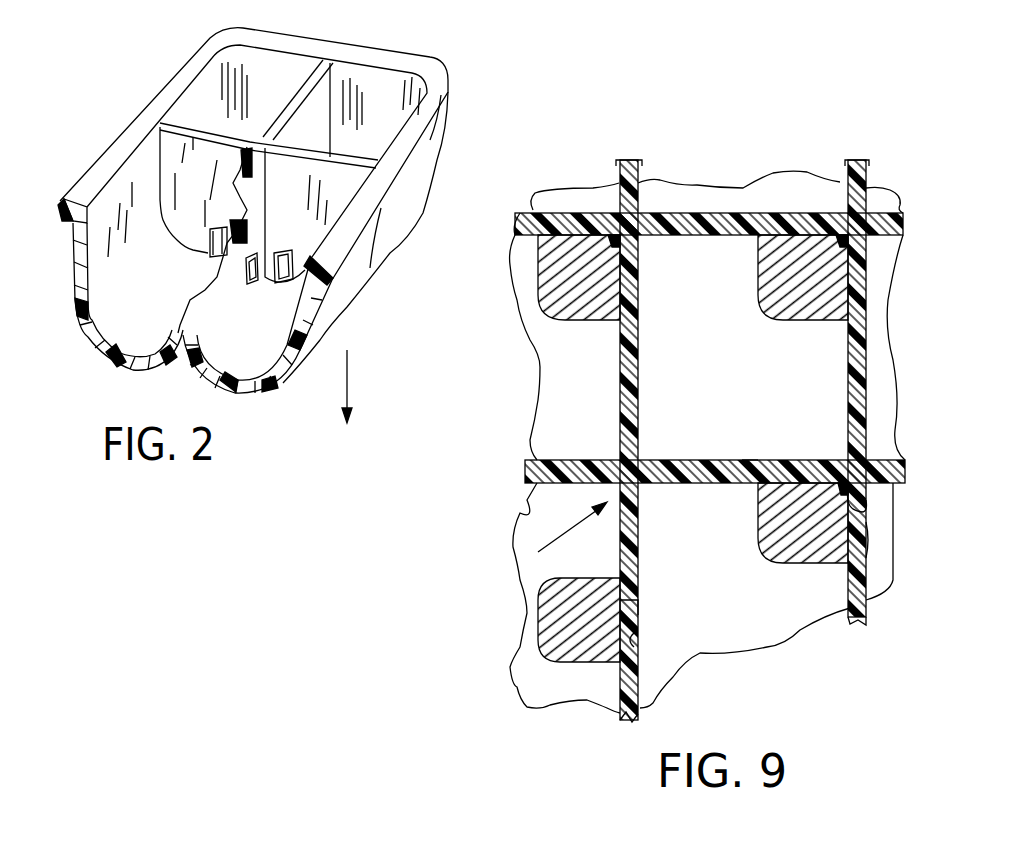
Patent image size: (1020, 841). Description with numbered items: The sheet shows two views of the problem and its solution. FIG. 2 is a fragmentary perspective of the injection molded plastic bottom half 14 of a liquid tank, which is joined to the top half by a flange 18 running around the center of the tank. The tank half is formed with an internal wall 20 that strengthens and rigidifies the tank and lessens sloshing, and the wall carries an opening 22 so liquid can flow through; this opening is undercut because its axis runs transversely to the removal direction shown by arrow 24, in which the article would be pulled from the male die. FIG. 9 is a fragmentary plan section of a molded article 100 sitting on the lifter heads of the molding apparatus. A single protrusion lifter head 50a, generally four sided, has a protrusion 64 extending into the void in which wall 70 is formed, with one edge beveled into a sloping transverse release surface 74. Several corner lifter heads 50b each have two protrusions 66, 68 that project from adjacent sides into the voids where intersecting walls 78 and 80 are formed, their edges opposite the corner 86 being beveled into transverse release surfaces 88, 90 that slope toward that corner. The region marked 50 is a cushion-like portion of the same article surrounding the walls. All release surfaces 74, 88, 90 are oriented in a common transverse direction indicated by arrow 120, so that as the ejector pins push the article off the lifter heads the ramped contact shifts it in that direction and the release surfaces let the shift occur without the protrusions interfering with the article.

In FIG. 2, the bottom half 14 is at (437, 57).
In FIG. 2, the flange 18 is at (437, 92).
In FIG. 2, the internal wall 20 is at (303, 194).
In FIG. 2, the opening 22 is at (286, 281).
In FIG. 2, the arrow 24 is at (352, 380).
In FIG. 9, the molded article 100 is at (641, 160).
In FIG. 9, the transverse release surface 90 is at (523, 212).
In FIG. 9, the transverse release surface 88 is at (642, 310).
In FIG. 9, the corner lifter head 50b is at (577, 321).
In FIG. 9, the single protrusion lifter head 50a is at (541, 652).
In FIG. 9, the cushion material 50 is at (745, 646).
In FIG. 9, the protrusion 68 is at (802, 460).
In FIG. 9, the wall 80 is at (750, 460).
In FIG. 9, the corner 86 is at (870, 500).
In FIG. 9, the protrusion 66 is at (864, 527).
In FIG. 9, the wall 78 is at (857, 618).
In FIG. 9, the wall 70 is at (640, 672).
In FIG. 9, the transverse release surface 74 is at (645, 633).
In FIG. 9, the protrusion 64 is at (642, 611).
In FIG. 9, the arrow 120 is at (554, 538).